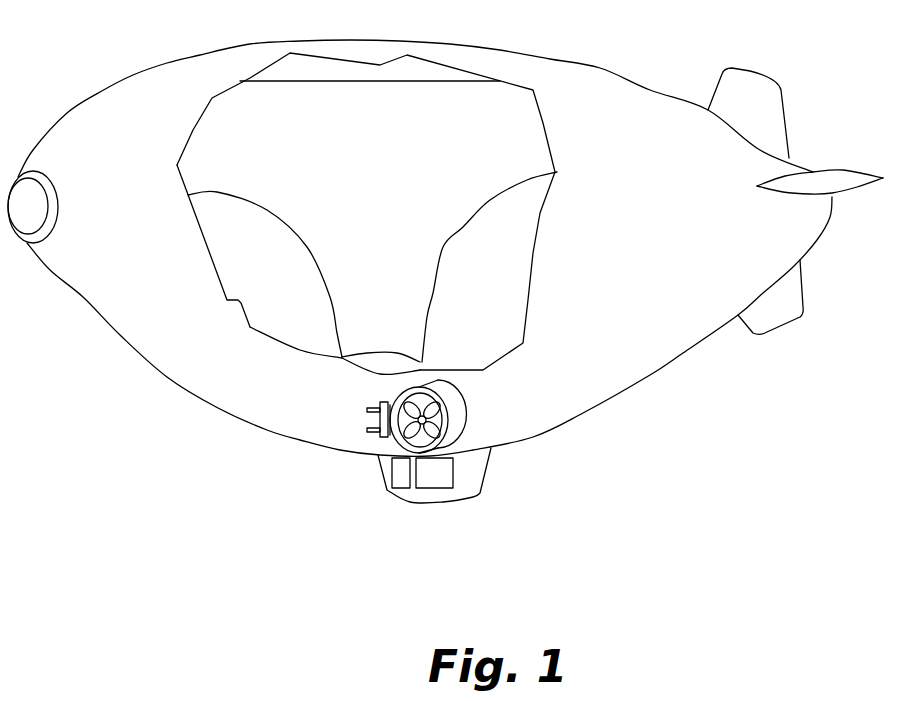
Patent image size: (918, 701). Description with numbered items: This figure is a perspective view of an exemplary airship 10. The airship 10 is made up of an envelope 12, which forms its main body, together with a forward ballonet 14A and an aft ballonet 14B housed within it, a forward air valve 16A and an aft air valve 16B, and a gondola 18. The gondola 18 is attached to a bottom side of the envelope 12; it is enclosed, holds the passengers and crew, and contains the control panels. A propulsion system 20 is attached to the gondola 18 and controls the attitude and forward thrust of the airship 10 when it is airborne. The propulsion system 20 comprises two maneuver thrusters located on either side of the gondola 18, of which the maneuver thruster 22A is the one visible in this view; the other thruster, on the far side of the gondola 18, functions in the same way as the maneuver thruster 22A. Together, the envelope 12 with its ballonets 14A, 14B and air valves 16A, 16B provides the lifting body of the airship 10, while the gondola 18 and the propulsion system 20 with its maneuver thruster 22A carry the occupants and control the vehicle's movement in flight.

The airship 10 is at (445, 283).
The envelope 12 is at (552, 68).
The forward ballonet 14A is at (242, 250).
The aft ballonet 14B is at (482, 260).
The forward air valve 16A is at (453, 402).
The aft air valve 16B is at (218, 403).
The gondola 18 is at (397, 497).
The propulsion system 20 is at (437, 532).
The maneuver thruster 22A is at (467, 426).